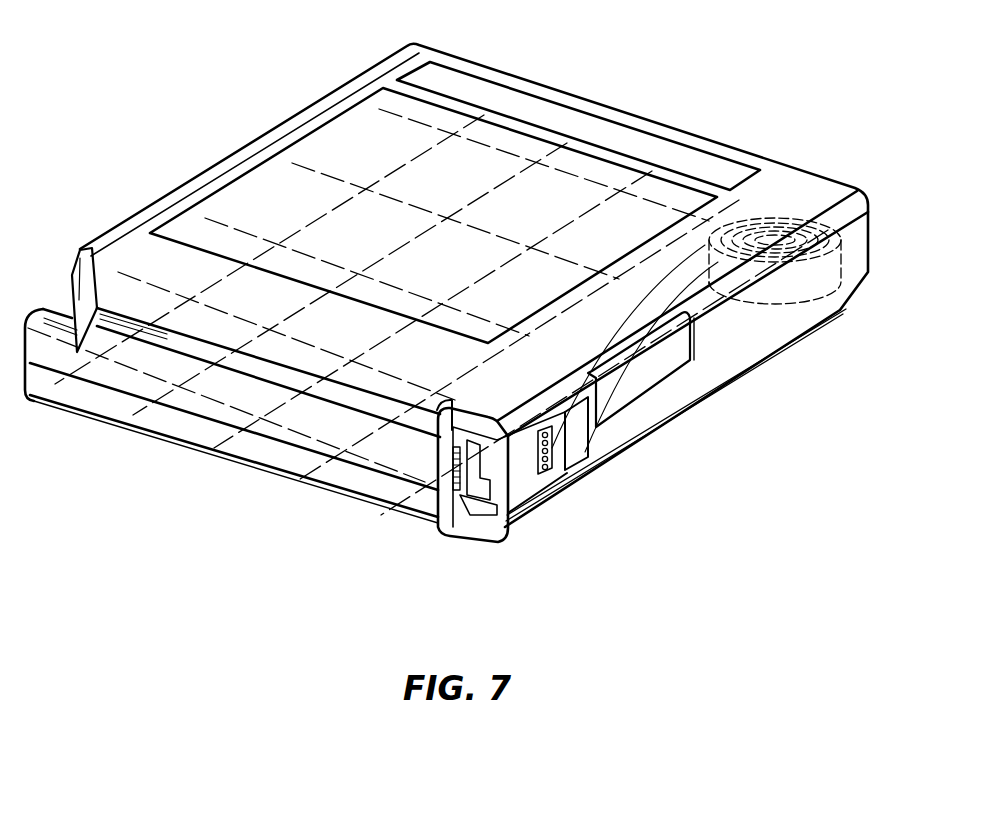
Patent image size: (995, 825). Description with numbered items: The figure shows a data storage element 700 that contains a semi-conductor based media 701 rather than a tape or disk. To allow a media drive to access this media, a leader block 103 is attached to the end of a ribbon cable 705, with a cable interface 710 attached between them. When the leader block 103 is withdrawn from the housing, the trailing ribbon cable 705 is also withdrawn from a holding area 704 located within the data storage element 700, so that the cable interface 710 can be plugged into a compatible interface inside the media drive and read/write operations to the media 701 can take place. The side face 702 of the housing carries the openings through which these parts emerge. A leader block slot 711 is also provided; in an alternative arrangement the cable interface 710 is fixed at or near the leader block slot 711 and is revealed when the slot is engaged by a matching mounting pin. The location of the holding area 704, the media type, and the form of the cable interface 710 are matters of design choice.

The data storage element 700 is at (683, 113).
The semi-conductor based media 701 is at (191, 296).
The side face 702 is at (742, 357).
The holding area 704 is at (773, 226).
The ribbon cable 705 is at (700, 296).
The cable interface 710 is at (549, 452).
The leader block 103 is at (508, 477).
The leader block slot 711 is at (477, 497).